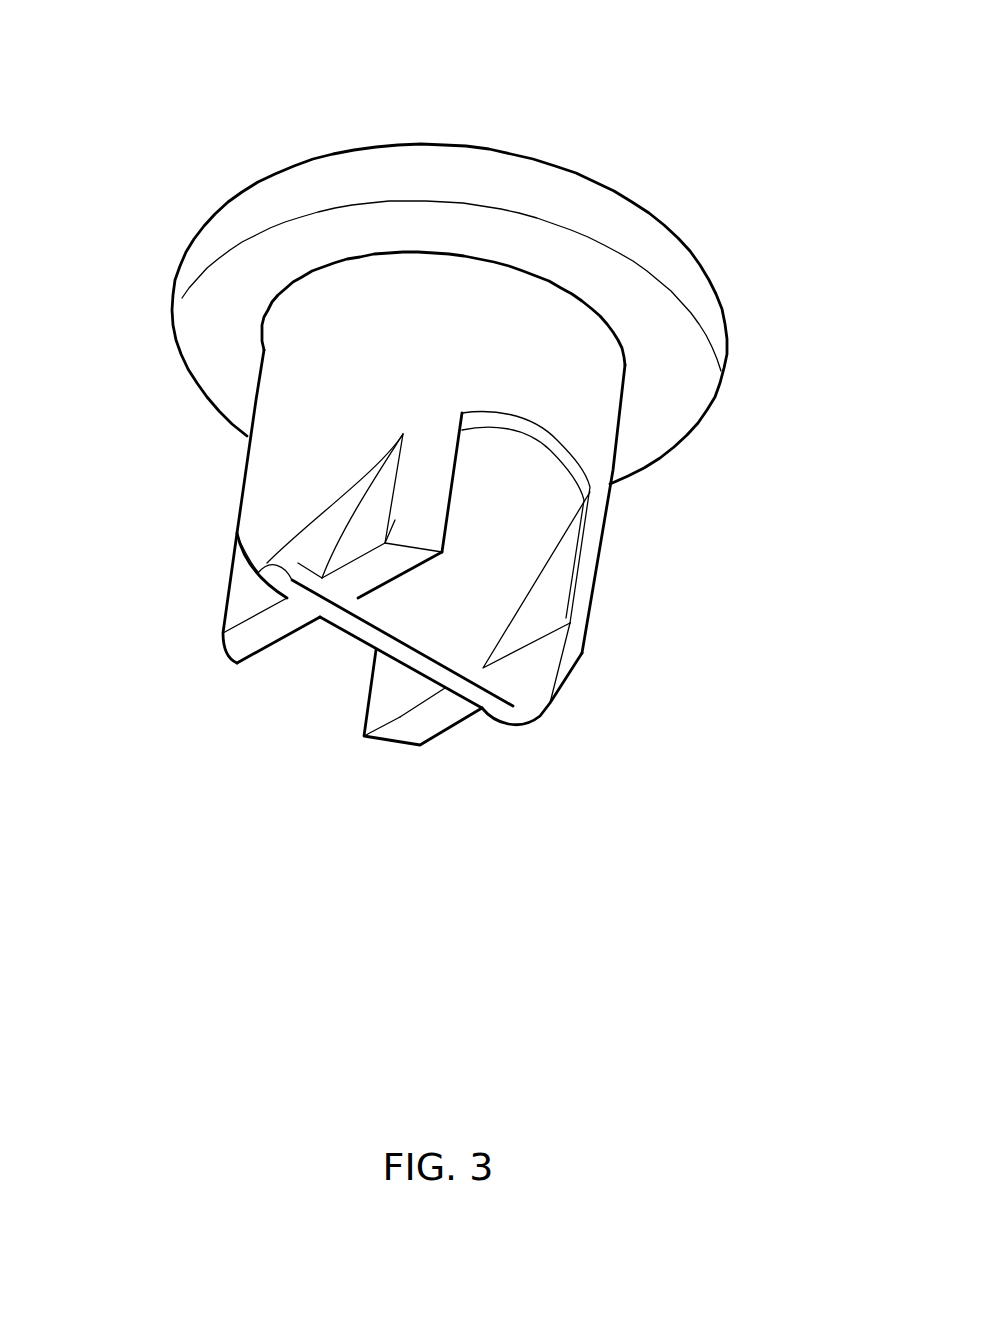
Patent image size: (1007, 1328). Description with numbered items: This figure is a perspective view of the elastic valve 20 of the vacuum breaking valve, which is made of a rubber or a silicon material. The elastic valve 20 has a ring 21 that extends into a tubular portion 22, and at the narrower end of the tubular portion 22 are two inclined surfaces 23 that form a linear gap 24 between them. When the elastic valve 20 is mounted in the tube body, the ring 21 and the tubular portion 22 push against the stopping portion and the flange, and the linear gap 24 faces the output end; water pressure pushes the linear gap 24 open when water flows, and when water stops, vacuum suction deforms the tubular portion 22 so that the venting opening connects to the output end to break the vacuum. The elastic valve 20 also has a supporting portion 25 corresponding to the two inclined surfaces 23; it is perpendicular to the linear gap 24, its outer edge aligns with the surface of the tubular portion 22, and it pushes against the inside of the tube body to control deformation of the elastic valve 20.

The elastic valve 20 is at (568, 137).
The ring 21 is at (347, 180).
The tubular portion 22 is at (317, 390).
The inclined surfaces 23 is at (488, 572).
The linear gap 24 is at (395, 636).
The supporting portion 25 is at (385, 740).